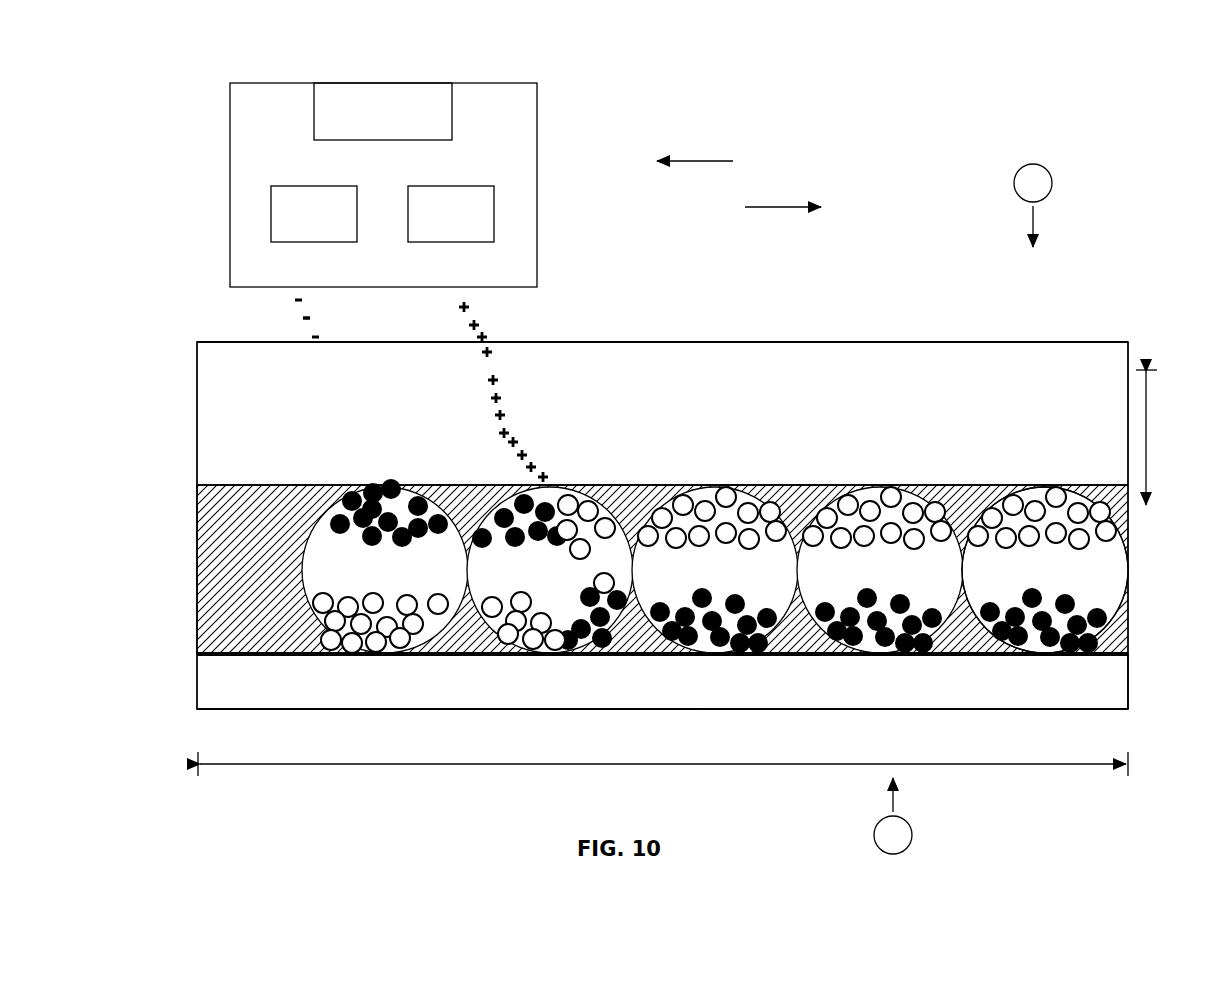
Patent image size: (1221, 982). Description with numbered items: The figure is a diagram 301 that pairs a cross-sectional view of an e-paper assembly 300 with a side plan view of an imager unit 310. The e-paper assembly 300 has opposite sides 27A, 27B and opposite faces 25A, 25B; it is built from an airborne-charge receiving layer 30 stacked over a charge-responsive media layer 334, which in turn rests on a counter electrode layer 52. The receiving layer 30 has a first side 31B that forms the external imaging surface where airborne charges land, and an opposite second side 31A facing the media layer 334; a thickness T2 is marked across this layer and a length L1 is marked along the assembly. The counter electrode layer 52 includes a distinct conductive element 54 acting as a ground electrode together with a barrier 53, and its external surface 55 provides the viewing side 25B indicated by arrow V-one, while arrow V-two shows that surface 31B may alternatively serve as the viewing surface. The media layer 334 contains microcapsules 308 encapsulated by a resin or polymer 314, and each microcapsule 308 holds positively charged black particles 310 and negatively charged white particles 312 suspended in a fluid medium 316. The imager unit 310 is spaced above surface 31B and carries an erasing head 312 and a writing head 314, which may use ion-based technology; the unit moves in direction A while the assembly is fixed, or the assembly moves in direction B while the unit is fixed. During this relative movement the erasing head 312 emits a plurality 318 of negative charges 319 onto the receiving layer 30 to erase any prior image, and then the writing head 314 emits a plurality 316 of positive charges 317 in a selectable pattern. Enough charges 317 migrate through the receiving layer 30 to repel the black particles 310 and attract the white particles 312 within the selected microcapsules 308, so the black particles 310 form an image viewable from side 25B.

The imager unit 310 is at (295, 80).
The erasing head 312 is at (305, 185).
The writing head 314 is at (495, 214).
The diagram 301 is at (783, 80).
The e-paper assembly 300 is at (718, 338).
The airborne-charge receiving layer 30 is at (196, 447).
The second side of airborne-charge receiving layer 31A is at (955, 484).
The first side of airborne-charge receiving layer 31B is at (981, 340).
The first face 25A is at (1050, 338).
The viewing side 25B is at (1074, 714).
The first side of e-paper assembly 27A is at (197, 547).
The second side of e-paper assembly 27B is at (1129, 661).
The charge-responsive media layer 334 is at (197, 600).
The microcapsule 308 is at (1097, 572).
The fluid medium 316 is at (1062, 585).
The positive charge 317 is at (491, 352).
The plurality of negative charges 318 is at (293, 330).
The negative charge 319 is at (358, 315).
The conductive element 54 is at (197, 656).
The counter electrode layer 52 is at (196, 684).
The barrier 53 is at (338, 695).
The external surface of counter electrode layer 55 is at (960, 709).
The thickness T2 is at (1157, 437).
The length L1 is at (663, 774).